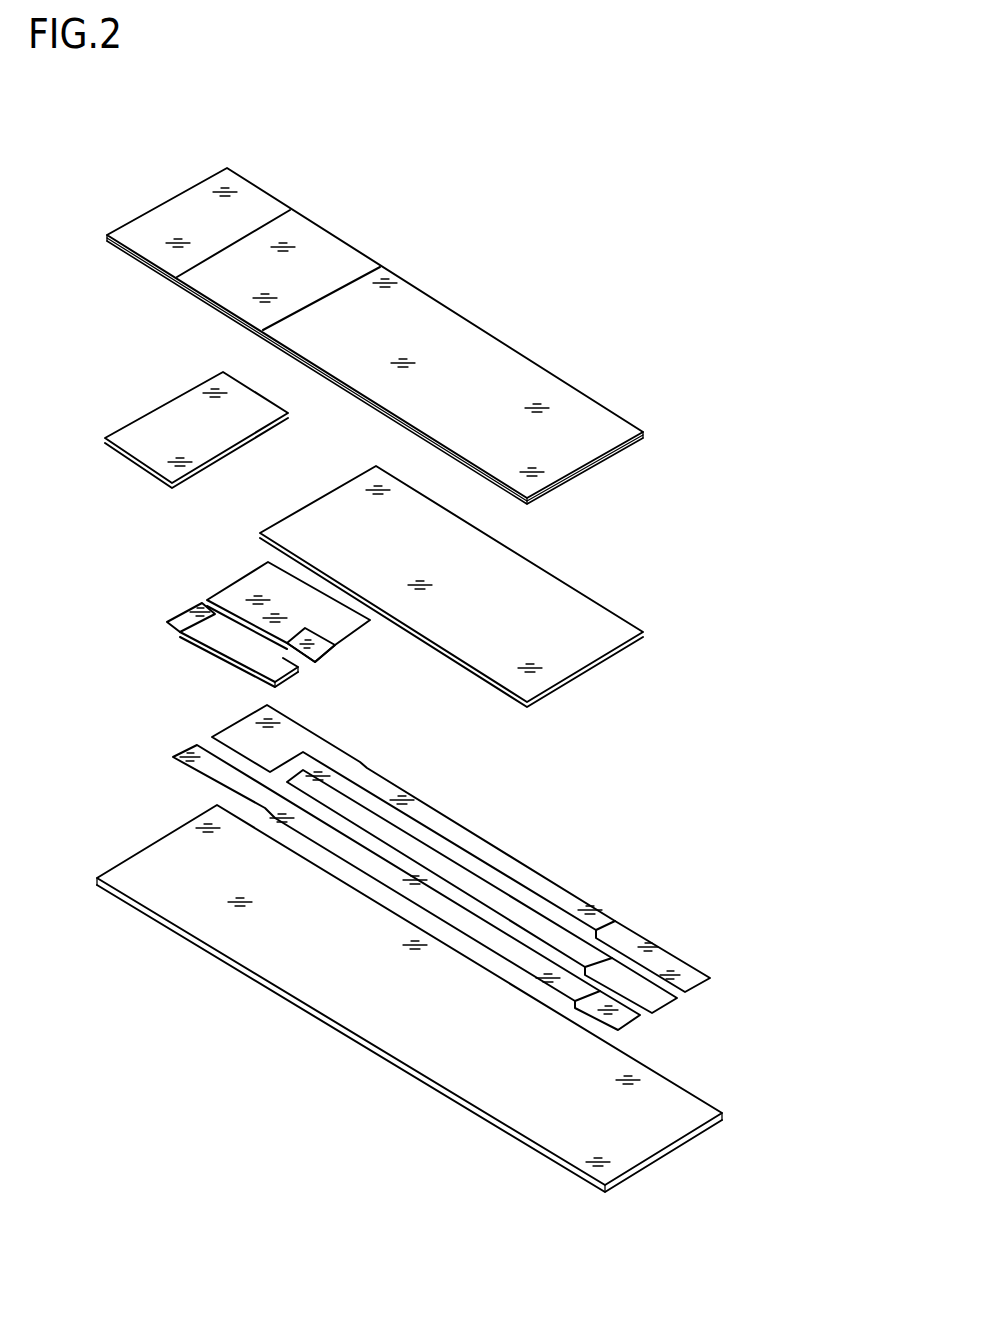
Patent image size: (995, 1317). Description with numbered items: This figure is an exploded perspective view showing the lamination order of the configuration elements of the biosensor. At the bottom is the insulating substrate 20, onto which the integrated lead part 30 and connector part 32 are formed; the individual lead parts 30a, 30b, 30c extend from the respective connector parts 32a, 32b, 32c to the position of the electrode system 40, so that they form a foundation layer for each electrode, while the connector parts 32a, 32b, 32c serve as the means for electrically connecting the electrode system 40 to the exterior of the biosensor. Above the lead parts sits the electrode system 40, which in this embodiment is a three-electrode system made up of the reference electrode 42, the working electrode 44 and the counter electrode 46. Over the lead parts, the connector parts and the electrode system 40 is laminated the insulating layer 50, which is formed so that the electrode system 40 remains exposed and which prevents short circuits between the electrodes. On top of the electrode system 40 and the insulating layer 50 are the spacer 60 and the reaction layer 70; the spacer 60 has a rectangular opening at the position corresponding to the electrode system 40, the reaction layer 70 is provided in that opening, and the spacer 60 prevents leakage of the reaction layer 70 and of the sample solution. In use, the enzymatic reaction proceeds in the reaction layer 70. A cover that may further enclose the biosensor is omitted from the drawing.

The insulating substrate 20 is at (668, 1098).
The lead part 30 is at (394, 853).
The lead part 30a is at (455, 870).
The lead part 30b is at (490, 937).
The lead part 30c is at (425, 808).
The connector part 32 is at (670, 931).
The connector part 32a is at (622, 970).
The connector part 32b is at (622, 987).
The connector part 32c is at (625, 930).
The electrode system 40 is at (239, 642).
The reference electrode 42 is at (239, 668).
The working electrode 44 is at (230, 645).
The counter electrode 46 is at (180, 630).
The insulating layer 50 is at (185, 410).
The spacer 60 is at (255, 186).
The reaction layer 70 is at (337, 245).